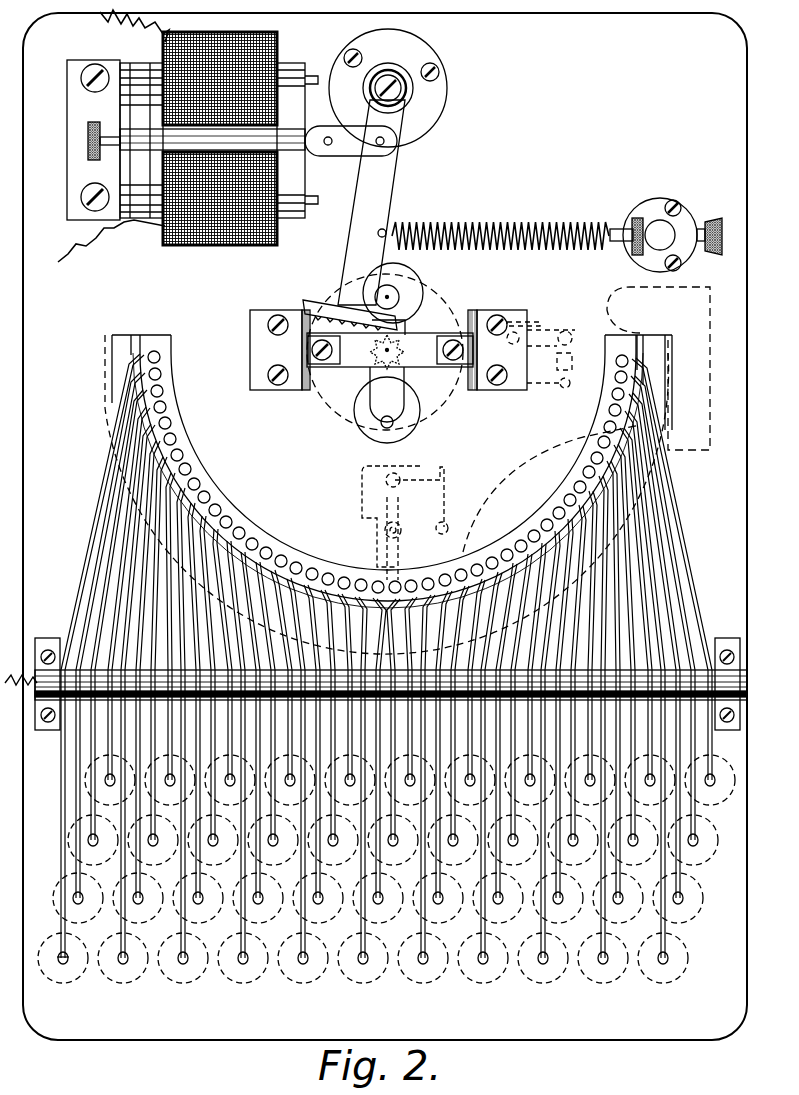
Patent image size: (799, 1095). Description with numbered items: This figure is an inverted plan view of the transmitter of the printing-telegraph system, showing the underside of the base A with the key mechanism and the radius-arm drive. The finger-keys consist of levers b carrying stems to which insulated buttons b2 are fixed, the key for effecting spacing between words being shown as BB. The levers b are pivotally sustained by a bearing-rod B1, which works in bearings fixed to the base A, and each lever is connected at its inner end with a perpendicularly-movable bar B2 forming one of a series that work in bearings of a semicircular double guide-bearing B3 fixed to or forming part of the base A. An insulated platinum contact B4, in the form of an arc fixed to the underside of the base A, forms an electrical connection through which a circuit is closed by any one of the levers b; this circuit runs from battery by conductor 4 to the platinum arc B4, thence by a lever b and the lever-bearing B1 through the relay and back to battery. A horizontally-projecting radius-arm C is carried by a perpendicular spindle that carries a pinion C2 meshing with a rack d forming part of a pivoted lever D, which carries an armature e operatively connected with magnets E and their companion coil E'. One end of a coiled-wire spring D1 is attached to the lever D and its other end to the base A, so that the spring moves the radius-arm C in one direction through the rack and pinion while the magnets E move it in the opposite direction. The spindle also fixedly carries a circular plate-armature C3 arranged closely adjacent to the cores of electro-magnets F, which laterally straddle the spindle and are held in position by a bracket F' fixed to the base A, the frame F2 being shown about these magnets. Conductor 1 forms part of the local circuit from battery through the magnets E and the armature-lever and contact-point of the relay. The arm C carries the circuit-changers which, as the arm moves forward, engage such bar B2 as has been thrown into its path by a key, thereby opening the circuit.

The conductor 1 is at (113, 135).
The conductor 4 is at (20, 669).
The base A is at (388, 652).
The bearing-rod B1 is at (714, 645).
The perpendicularly-movable bar B2 is at (700, 482).
The semicircular double guide-bearing B3 is at (560, 500).
The insulated platinum contact B4 is at (131, 340).
The spacing key BB is at (69, 975).
The radius-arm C is at (508, 413).
The pinion C2 is at (397, 350).
The circular plate-armature C3 is at (427, 305).
The pivoted lever D is at (392, 187).
The coiled-wire spring D1 is at (522, 230).
The magnets E is at (192, 126).
The electromagnet coil E' is at (220, 198).
The electro-magnets F is at (406, 295).
The bracket F' is at (369, 405).
The frame F2 is at (503, 304).
The lever b is at (68, 800).
The insulated button b2 is at (682, 962).
The rack d is at (312, 310).
The armature e is at (303, 170).